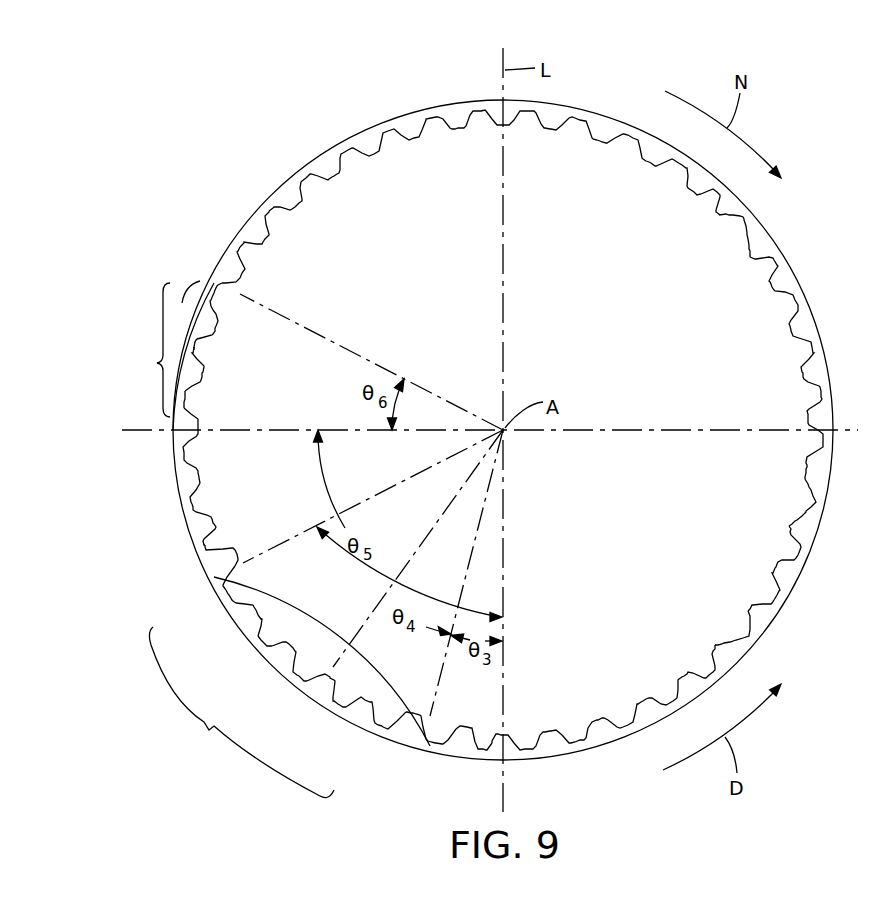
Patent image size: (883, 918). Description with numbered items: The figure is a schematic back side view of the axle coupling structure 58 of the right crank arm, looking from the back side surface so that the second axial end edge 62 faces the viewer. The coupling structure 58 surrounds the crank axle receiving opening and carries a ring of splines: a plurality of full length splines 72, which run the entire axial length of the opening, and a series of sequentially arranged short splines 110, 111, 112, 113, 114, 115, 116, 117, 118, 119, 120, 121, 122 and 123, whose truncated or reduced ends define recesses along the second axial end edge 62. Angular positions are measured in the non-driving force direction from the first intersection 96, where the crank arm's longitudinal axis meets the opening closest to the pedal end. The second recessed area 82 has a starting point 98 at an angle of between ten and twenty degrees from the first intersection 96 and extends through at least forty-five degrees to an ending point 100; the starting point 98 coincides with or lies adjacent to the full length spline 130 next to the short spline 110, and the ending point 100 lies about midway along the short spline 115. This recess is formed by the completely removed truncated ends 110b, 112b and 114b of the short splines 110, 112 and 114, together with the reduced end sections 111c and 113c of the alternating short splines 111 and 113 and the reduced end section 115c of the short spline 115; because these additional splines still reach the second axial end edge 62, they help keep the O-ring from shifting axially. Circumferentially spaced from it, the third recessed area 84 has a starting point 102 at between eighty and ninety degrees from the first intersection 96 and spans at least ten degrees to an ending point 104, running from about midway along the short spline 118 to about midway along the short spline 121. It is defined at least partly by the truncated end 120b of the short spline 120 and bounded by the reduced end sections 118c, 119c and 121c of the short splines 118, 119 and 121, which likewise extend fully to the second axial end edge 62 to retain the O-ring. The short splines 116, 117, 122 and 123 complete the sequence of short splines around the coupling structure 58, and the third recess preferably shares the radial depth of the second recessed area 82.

The axle coupling structure 58 is at (286, 128).
The second axial end edge 62 is at (787, 288).
The full length splines 72 is at (750, 258).
The second recessed area 82 is at (289, 687).
The third recessed area 84 is at (169, 355).
The first intersection 96 is at (507, 745).
The starting point 98 is at (432, 740).
The ending point 100 is at (236, 548).
The starting point 102 is at (199, 427).
The ending point 104 is at (210, 293).
The short spline 110 is at (412, 712).
The truncated end 110b is at (391, 733).
The short spline 111 is at (364, 698).
The reduced end section 111c is at (344, 713).
The short spline 112 is at (331, 678).
The truncated end 112b is at (302, 682).
The short spline 113 is at (291, 646).
The reduced end section 113c is at (275, 655).
The short spline 114 is at (257, 612).
The truncated end 114b is at (250, 614).
The short spline 115 is at (240, 570).
The reduced end section 115c is at (225, 568).
The short spline 116 is at (205, 527).
The short spline 117 is at (196, 477).
The short spline 118 is at (199, 431).
The reduced end section 118c is at (197, 431).
The short spline 119 is at (203, 373).
The reduced end section 119c is at (194, 350).
The short spline 120 is at (215, 328).
The truncated end 120b is at (205, 331).
The short spline 121 is at (238, 259).
The reduced end section 121c is at (219, 296).
The short spline 122 is at (263, 256).
The short spline 123 is at (293, 218).
The spline 130 is at (480, 750).